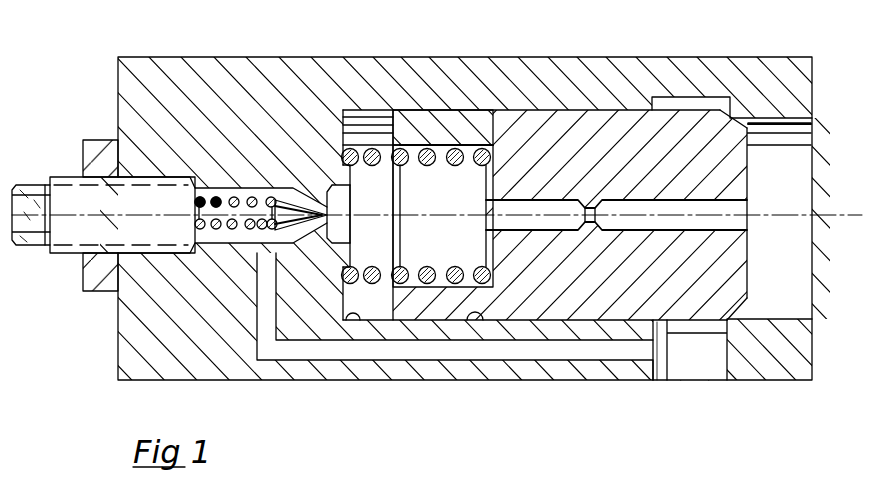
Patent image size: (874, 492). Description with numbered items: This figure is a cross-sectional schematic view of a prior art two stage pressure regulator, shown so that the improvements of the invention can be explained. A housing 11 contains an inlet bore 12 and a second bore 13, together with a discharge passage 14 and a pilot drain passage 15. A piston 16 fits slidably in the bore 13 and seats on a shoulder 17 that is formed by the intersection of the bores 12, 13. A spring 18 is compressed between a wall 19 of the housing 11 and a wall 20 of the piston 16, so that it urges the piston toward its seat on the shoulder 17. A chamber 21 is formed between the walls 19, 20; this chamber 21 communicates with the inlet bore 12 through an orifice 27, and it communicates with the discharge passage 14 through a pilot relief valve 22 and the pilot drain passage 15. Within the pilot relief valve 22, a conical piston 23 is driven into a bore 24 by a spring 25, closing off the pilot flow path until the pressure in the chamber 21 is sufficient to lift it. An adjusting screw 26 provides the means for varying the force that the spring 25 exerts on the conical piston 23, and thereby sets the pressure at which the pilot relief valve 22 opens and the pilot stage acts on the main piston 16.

The housing 11 is at (733, 58).
The bore 12 is at (783, 318).
The bore 13 is at (473, 313).
The discharge passage 14 is at (722, 362).
The pilot drain passage 15 is at (585, 352).
The piston 16 is at (748, 178).
The shoulder 17 is at (727, 316).
The spring 18 is at (455, 280).
The wall 19 is at (355, 314).
The wall 20 is at (481, 148).
The chamber 21 is at (452, 226).
The pilot relief valve 22 is at (352, 204).
The conical piston 23 is at (293, 200).
The bore 24 is at (320, 233).
The spring 25 is at (239, 188).
The adjusting screw 26 is at (63, 256).
The orifice 27 is at (587, 205).